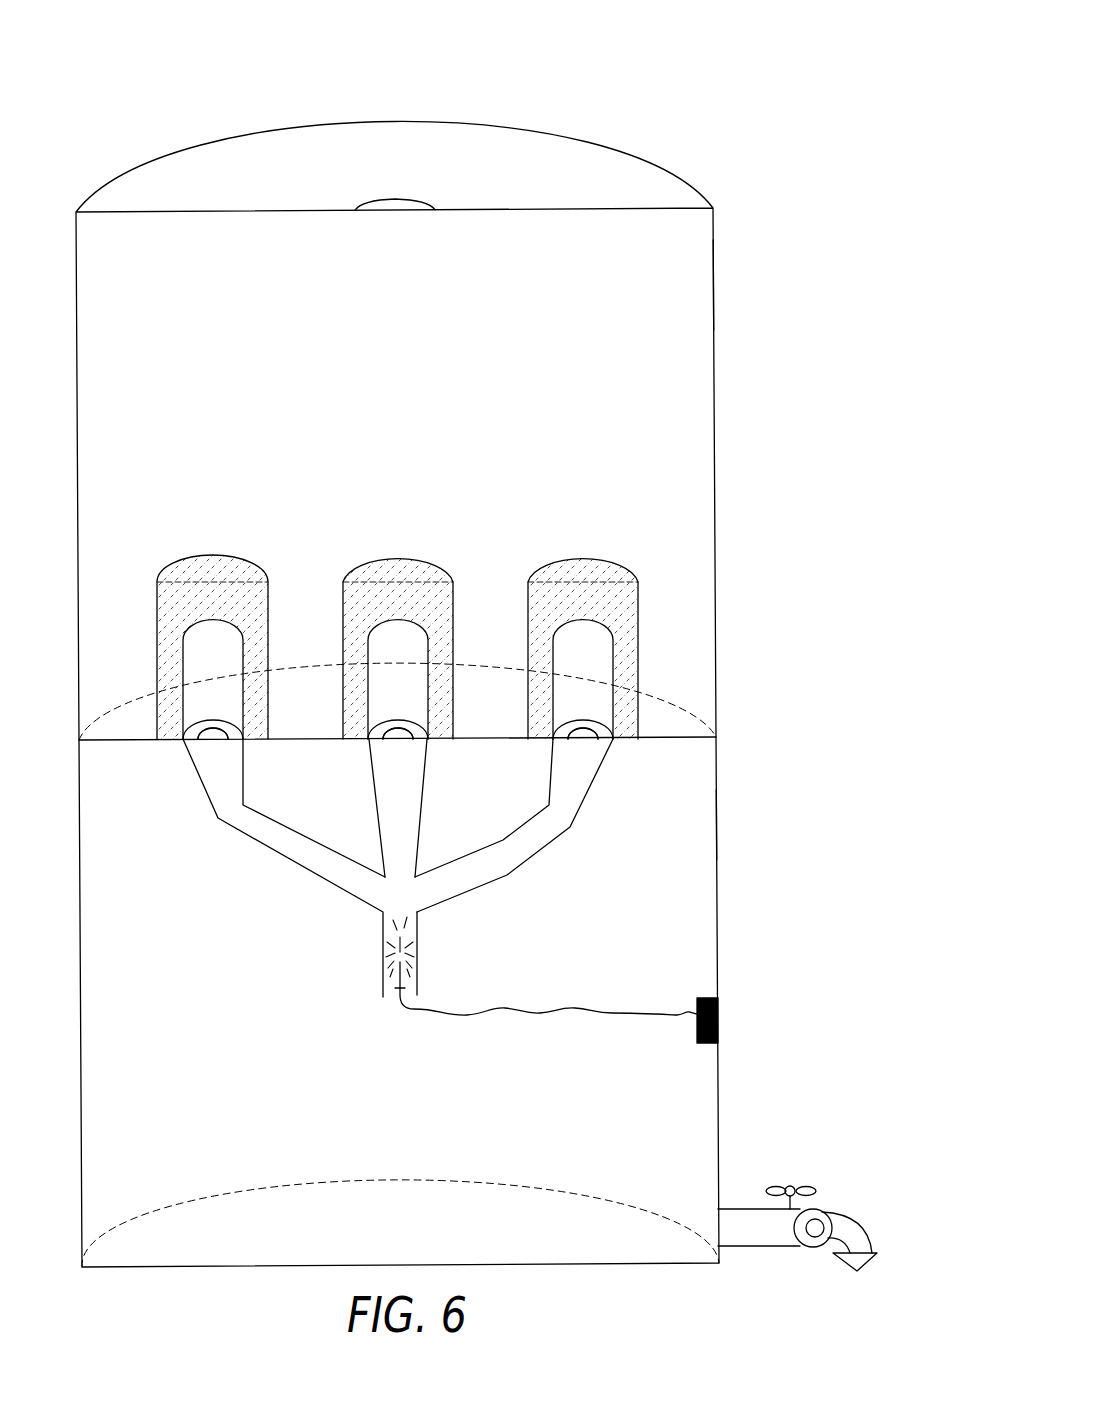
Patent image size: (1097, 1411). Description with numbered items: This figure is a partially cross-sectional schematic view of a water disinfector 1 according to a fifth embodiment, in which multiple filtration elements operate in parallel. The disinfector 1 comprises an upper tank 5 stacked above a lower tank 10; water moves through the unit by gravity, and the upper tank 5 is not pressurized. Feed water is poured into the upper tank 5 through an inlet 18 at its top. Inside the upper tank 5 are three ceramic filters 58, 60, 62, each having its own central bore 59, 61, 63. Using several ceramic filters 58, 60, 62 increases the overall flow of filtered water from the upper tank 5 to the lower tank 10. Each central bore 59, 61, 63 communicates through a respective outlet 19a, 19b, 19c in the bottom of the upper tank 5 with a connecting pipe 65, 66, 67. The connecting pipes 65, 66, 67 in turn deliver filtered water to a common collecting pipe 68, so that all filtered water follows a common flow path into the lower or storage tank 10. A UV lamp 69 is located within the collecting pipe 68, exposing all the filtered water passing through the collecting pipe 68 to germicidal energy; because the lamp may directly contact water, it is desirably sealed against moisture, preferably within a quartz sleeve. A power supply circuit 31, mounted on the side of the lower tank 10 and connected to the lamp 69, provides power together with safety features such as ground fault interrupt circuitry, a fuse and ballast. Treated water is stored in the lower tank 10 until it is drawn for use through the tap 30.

The water disinfector 1 is at (615, 98).
The upper tank 5 is at (717, 285).
The lower tank 10 is at (720, 822).
The inlet 18 is at (376, 198).
The outlet 19a is at (207, 741).
The outlet 19b is at (410, 739).
The outlet 19c is at (590, 736).
The tap 30 is at (735, 1209).
The power supply circuit 31 is at (718, 998).
The ceramic filter 58 is at (197, 555).
The central bore 59 is at (222, 669).
The ceramic filter 60 is at (407, 555).
The central bore 61 is at (407, 669).
The ceramic filter 62 is at (575, 555).
The central bore 63 is at (588, 669).
The connecting pipe 65 is at (263, 833).
The connecting pipe 66 is at (393, 772).
The connecting pipe 67 is at (522, 845).
The collecting pipe 68 is at (383, 942).
The UV lamp 69 is at (398, 965).